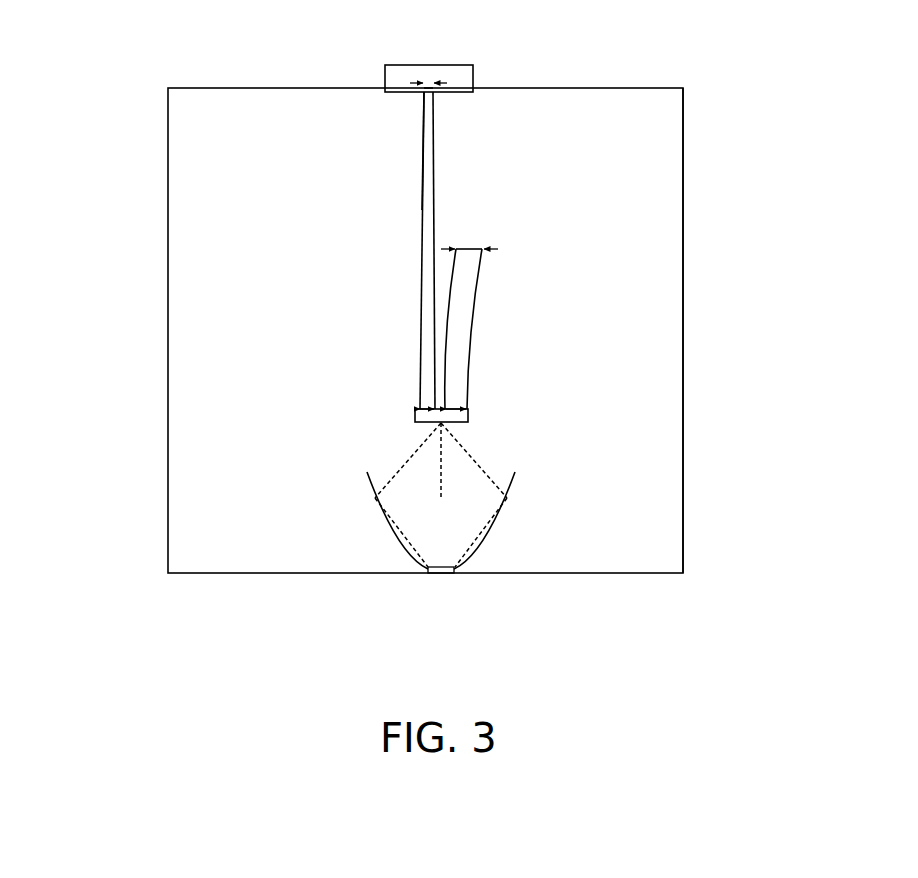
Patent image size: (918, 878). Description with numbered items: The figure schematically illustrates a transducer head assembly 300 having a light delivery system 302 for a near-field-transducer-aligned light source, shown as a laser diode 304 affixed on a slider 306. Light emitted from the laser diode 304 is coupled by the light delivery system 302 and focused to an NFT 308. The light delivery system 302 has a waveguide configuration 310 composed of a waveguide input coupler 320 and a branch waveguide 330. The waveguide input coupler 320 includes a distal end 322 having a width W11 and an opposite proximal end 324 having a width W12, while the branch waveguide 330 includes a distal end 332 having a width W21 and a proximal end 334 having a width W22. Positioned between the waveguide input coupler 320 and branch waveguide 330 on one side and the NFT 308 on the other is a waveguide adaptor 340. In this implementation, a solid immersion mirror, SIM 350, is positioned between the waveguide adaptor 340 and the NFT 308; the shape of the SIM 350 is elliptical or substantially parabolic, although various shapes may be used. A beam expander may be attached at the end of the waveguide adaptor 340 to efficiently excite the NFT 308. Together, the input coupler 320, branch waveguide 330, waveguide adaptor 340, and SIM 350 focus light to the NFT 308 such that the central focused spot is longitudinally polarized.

The transducer head assembly 300 is at (98, 76).
The light delivery system 302 is at (514, 160).
The laser diode 304 is at (473, 78).
The slider 306 is at (688, 152).
The NFT 308 is at (448, 576).
The waveguide configuration 310 is at (418, 256).
The waveguide input coupler 320 is at (421, 203).
The distal end 322 is at (424, 96).
The proximal end 324 is at (415, 409).
The branch waveguide 330 is at (471, 327).
The distal end 332 is at (476, 249).
The proximal end 334 is at (467, 409).
The waveguide adaptor 340 is at (415, 421).
The solid immersion mirror 350 is at (386, 527).
The width W11 is at (427, 70).
The width W12 is at (420, 403).
The width W21 is at (487, 251).
The width W22 is at (470, 425).